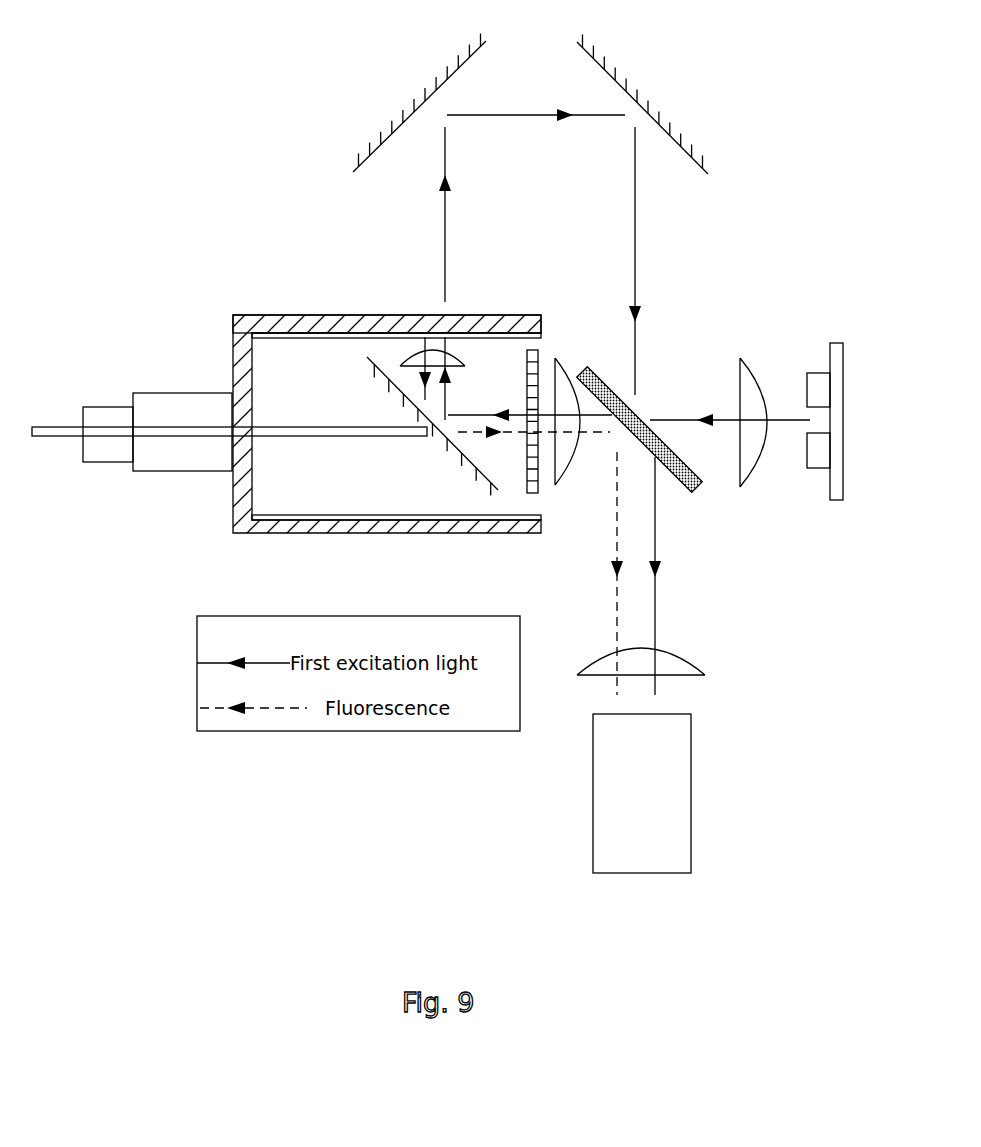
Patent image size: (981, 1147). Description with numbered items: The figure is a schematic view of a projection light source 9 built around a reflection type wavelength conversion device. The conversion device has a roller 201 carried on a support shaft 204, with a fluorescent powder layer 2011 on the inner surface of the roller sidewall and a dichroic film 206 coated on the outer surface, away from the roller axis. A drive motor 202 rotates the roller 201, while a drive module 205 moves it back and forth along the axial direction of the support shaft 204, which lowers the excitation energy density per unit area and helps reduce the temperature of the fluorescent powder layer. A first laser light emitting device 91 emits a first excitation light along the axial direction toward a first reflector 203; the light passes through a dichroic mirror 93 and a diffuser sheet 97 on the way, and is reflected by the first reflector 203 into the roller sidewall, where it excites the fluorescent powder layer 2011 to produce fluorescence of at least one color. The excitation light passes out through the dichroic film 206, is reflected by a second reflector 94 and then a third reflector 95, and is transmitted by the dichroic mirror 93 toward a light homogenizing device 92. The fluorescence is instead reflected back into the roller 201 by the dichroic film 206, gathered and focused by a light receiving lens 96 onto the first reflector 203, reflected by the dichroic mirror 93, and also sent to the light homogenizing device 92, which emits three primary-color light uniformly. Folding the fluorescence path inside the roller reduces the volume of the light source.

The projection light source 9 is at (102, 70).
The first laser light emitting device 91 is at (830, 342).
The light homogenizing device 92 is at (593, 793).
The dichroic mirror 93 is at (697, 487).
The second reflector 94 is at (370, 123).
The third reflector 95 is at (643, 92).
The light receiving lens 96 is at (457, 365).
The diffuser sheet 97 is at (538, 485).
The roller 201 is at (242, 480).
The fluorescent powder layer 2011 is at (270, 335).
The drive motor 202 is at (190, 392).
The first reflector 203 is at (443, 453).
The support shaft 204 is at (280, 426).
The drive module 205 is at (110, 405).
The dichroic film 206 is at (337, 313).